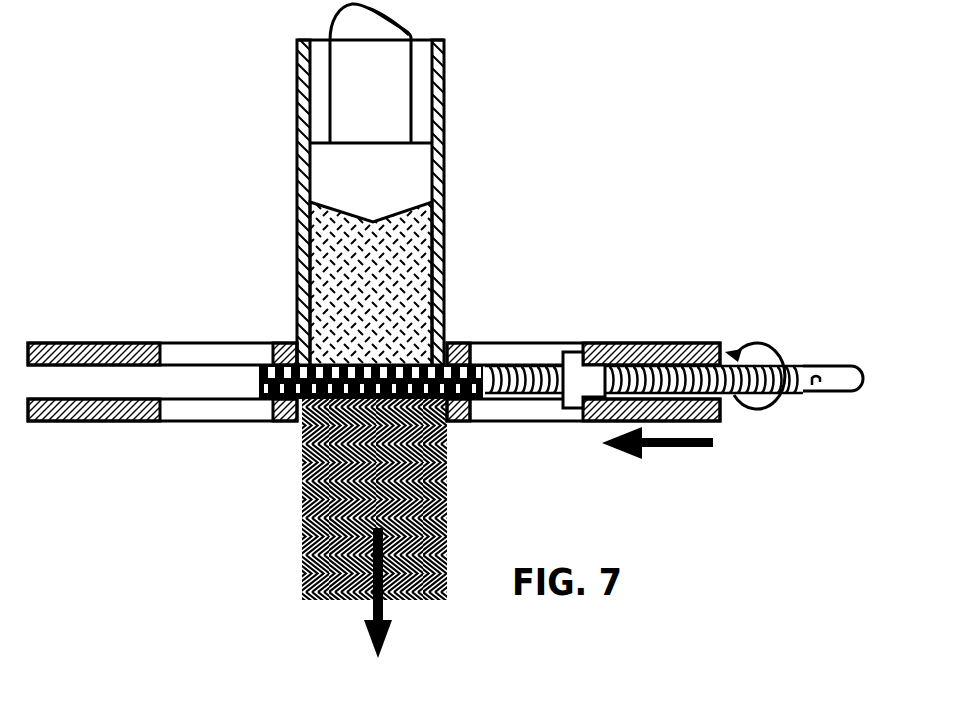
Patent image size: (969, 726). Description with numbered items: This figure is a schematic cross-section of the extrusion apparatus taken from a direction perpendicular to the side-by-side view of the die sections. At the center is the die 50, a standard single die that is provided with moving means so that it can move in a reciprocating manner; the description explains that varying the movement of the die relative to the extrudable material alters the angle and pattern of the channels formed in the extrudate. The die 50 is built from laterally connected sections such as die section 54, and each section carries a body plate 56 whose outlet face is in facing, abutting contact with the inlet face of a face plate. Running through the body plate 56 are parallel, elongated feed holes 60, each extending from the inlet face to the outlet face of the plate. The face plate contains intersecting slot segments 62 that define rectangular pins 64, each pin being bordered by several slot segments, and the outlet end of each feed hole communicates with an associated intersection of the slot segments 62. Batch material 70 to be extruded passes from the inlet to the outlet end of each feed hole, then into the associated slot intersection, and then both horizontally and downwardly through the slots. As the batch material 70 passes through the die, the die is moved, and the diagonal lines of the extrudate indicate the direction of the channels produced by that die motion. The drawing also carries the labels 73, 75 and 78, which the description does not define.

The tissue fastening device 50 is at (550, 118).
The lower plate 54 is at (252, 395).
The upper plate 56 is at (252, 368).
The upper support block 60 is at (462, 366).
The lower support block 62 is at (452, 412).
The clamp blocks 64 is at (282, 404).
The filler material 70 is at (316, 242).
The threaded drive rod 73 is at (849, 365).
The rack 75 is at (233, 381).
The tissue block 78 is at (276, 542).